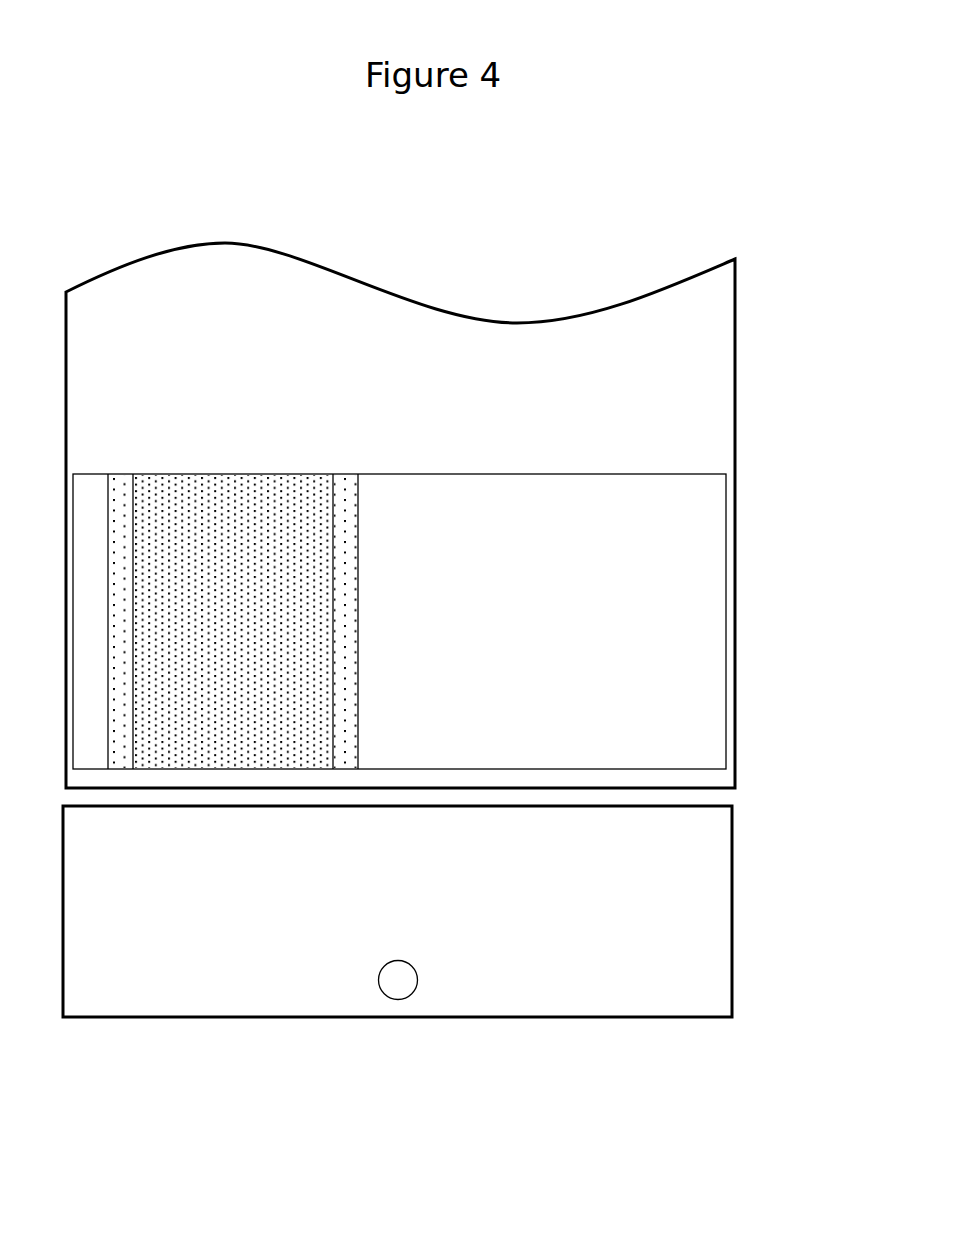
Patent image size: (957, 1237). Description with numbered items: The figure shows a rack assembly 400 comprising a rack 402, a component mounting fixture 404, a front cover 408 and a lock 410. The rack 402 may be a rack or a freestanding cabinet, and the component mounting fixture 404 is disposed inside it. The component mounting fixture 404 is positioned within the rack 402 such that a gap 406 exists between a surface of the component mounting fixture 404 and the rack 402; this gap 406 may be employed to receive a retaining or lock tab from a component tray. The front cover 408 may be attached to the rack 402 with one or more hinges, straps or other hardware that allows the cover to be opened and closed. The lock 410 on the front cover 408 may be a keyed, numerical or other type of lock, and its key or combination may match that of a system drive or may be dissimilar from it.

The rack assembly 400 is at (668, 145).
The rack 402 is at (433, 294).
The component mounting fixture 404 is at (685, 597).
The gap 406 is at (723, 778).
The front cover 408 is at (722, 905).
The lock 410 is at (398, 988).